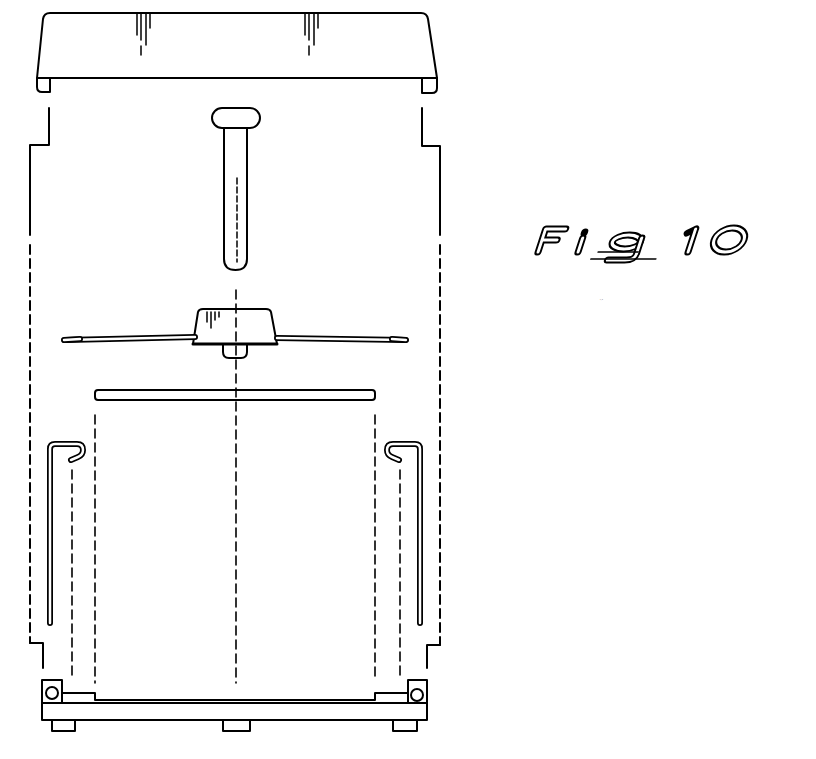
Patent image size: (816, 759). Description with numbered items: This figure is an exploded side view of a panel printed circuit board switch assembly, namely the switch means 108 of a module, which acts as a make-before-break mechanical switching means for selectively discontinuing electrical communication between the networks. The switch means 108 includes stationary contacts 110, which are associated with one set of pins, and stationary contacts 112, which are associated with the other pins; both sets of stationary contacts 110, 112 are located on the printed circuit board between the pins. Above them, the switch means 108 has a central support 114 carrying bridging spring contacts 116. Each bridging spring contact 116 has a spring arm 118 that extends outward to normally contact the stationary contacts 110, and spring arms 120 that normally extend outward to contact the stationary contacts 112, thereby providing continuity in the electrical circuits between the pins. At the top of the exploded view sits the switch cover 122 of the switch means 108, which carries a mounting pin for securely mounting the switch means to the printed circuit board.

The switch means 108 is at (490, 166).
The stationary contacts 110 is at (66, 440).
The stationary contacts 112 is at (403, 441).
The central support 114 is at (258, 325).
The bridging spring contacts 116 is at (72, 333).
The spring arm 118 is at (129, 333).
The spring arms 120 is at (338, 333).
The switch cover 122 is at (395, 50).